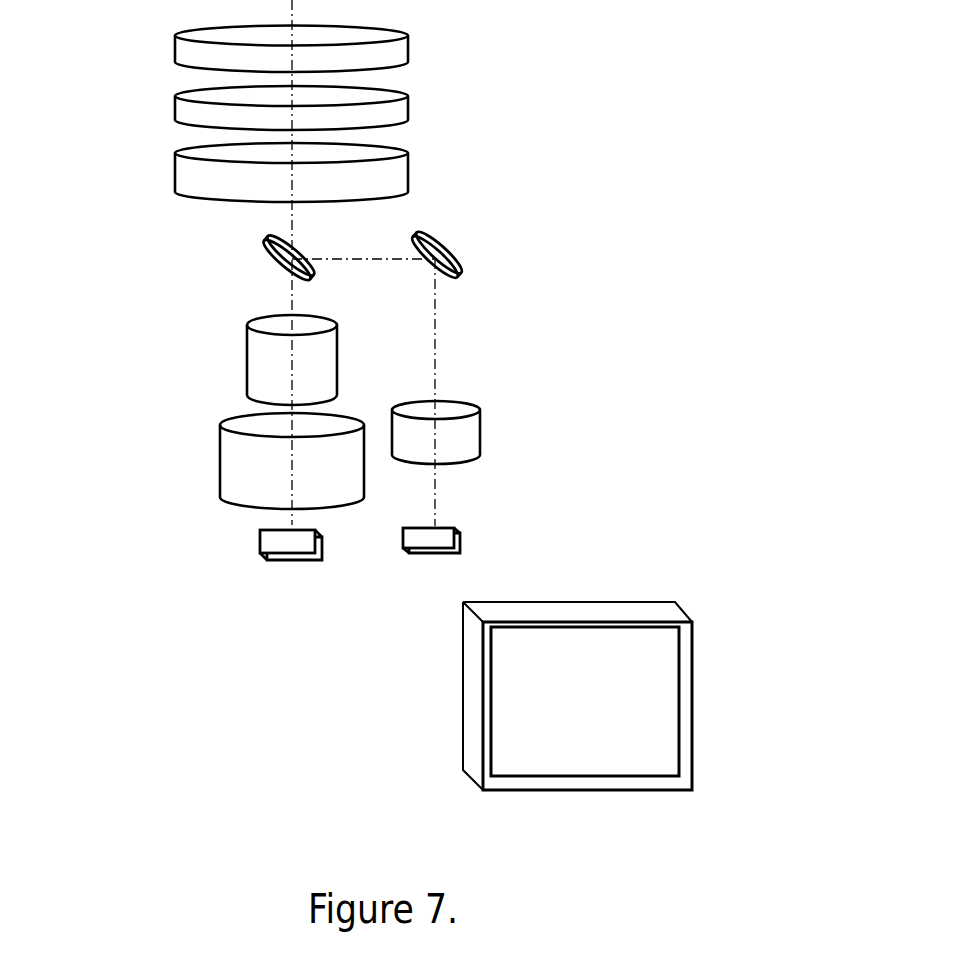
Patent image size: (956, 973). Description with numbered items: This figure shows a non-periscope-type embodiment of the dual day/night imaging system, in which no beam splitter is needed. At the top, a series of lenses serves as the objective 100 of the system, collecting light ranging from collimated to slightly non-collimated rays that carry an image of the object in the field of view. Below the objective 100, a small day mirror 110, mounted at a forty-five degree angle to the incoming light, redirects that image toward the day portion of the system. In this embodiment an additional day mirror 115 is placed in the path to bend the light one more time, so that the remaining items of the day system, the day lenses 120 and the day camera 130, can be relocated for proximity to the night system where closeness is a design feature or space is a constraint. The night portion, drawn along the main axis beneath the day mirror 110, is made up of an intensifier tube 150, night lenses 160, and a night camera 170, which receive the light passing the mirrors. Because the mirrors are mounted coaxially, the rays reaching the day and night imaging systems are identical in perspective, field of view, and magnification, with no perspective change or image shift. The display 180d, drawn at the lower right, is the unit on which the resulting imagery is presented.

The objective 100 is at (418, 30).
The day mirror 110 is at (282, 275).
The additional day mirror 115 is at (452, 250).
The day lenses 120 is at (480, 430).
The day camera 130 is at (467, 545).
The intensifier tube 150 is at (247, 358).
The night lenses 160 is at (220, 460).
The night camera 170 is at (258, 543).
The display 180d is at (695, 627).